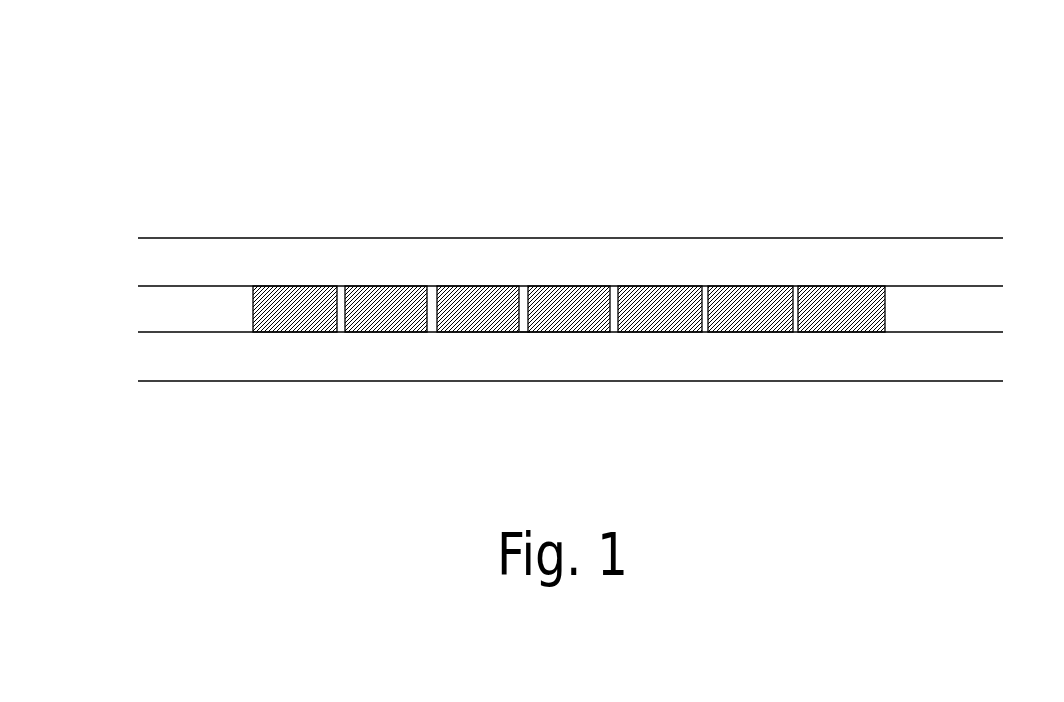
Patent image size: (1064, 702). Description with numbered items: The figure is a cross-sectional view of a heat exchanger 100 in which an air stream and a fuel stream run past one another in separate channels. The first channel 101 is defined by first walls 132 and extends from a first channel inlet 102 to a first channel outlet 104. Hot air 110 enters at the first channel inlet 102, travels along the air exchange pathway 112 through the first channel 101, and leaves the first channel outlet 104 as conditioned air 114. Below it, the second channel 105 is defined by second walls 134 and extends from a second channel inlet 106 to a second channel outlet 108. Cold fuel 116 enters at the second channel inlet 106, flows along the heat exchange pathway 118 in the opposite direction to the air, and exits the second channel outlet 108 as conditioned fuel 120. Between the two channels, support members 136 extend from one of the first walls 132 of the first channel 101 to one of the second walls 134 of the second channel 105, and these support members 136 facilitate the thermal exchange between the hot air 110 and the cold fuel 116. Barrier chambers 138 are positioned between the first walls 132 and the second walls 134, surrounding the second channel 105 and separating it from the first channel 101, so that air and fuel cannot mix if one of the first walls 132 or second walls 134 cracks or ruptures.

The heat exchanger 100 is at (720, 116).
The first channel 101 is at (455, 258).
The first channel inlet 102 is at (137, 260).
The first channel outlet 104 is at (1003, 265).
The second channel 105 is at (428, 360).
The second channel inlet 106 is at (1001, 360).
The second channel outlet 108 is at (138, 353).
The hot air 110 is at (265, 263).
The air exchange pathway 112 is at (612, 263).
The conditioned air 114 is at (960, 264).
The cold fuel 116 is at (828, 357).
The heat exchange pathway 118 is at (550, 355).
The conditioned fuel 120 is at (265, 354).
The first walls 132 is at (665, 287).
The second walls 134 is at (533, 333).
The support members 136 is at (428, 312).
The barrier chambers 138 is at (660, 308).